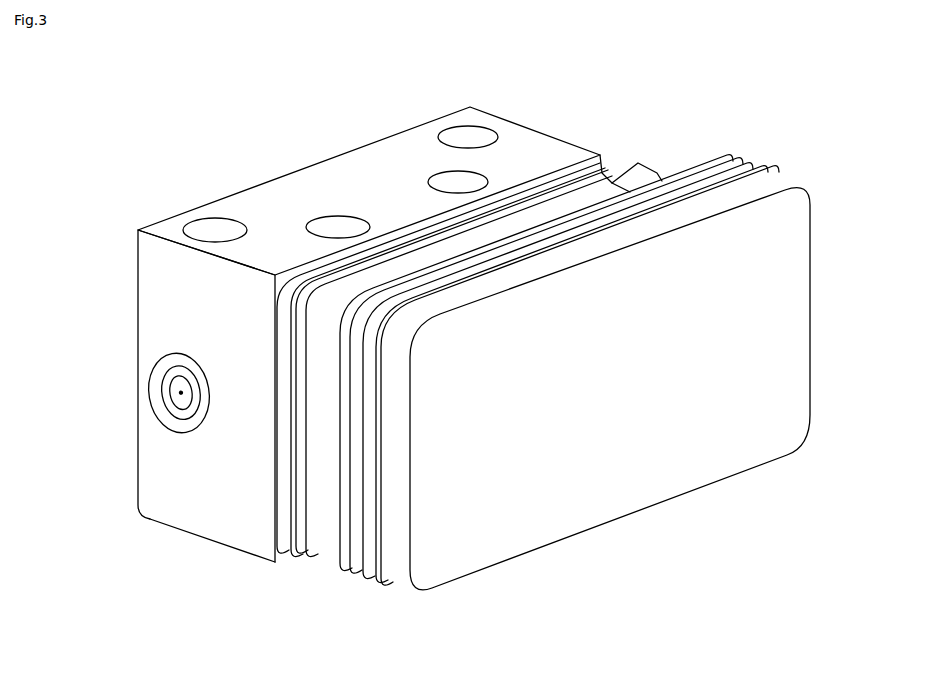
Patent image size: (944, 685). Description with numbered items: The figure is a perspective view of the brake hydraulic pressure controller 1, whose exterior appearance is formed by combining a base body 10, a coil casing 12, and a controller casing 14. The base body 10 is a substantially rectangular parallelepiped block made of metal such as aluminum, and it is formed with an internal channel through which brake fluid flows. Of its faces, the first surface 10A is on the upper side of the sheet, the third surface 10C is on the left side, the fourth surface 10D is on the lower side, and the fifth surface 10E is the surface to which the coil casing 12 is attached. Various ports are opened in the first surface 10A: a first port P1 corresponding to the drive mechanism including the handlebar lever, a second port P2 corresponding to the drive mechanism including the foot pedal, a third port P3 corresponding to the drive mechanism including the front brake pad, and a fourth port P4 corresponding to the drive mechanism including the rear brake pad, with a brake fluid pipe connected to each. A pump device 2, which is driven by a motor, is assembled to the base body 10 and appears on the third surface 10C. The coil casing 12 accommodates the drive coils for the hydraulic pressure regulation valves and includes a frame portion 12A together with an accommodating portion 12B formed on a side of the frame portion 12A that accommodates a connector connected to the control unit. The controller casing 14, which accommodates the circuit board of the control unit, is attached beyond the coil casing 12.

The brake hydraulic pressure controller 1 is at (213, 147).
The base body 10 is at (319, 164).
The first surface 10A is at (533, 153).
The third surface 10C is at (192, 515).
The fourth surface 10D is at (235, 550).
The fifth surface 10E is at (612, 181).
The first port P1 is at (203, 232).
The second port P2 is at (455, 138).
The third port P3 is at (328, 224).
The fourth port P4 is at (440, 183).
The pump device 2 is at (172, 397).
The coil casing 12 is at (322, 540).
The frame portion 12A is at (317, 505).
The accommodating portion 12B is at (663, 172).
The controller casing 14 is at (783, 208).